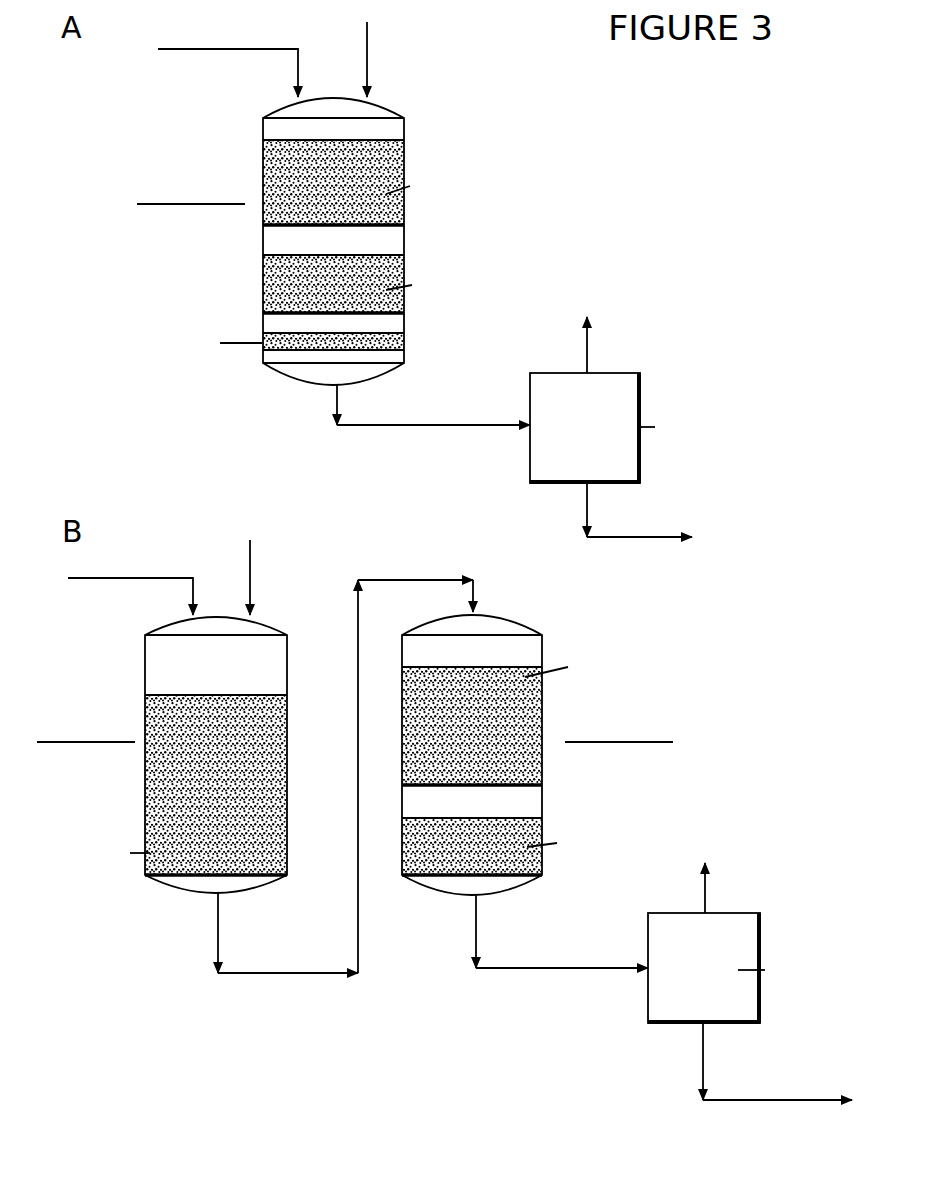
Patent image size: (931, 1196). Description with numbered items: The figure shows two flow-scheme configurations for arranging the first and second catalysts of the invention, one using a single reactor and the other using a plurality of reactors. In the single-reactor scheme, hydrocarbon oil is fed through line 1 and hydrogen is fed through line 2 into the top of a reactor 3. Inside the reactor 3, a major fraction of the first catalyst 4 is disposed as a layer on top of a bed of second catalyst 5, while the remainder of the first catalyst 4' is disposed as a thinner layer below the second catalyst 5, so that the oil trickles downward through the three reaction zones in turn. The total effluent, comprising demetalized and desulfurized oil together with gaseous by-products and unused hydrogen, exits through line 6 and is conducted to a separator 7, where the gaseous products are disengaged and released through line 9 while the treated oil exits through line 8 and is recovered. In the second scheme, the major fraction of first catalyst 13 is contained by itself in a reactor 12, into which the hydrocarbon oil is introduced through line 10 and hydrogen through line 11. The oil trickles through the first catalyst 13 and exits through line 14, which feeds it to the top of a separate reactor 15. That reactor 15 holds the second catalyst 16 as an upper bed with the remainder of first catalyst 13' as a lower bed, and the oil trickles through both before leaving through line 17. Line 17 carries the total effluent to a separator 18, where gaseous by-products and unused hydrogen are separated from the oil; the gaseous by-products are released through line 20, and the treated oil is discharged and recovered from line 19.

The line 1 is at (206, 49).
The line 2 is at (368, 43).
The reactor 3 is at (262, 232).
The first catalyst 4 is at (400, 182).
The remainder of the first catalyst 4' is at (244, 360).
The second catalyst 5 is at (385, 300).
The line 6 is at (432, 428).
The separator 7 is at (592, 441).
The line 8 is at (655, 541).
The line 9 is at (588, 343).
The line 10 is at (137, 577).
The line 11 is at (251, 577).
The reactor 12 is at (145, 758).
The first catalyst 13 is at (177, 785).
The remainder of first catalyst 13' is at (548, 850).
The line 14 is at (287, 975).
The reactor 15 is at (545, 767).
The second catalyst 16 is at (530, 697).
The line 17 is at (536, 972).
The separator 18 is at (718, 981).
The line 19 is at (766, 1104).
The line 20 is at (706, 890).